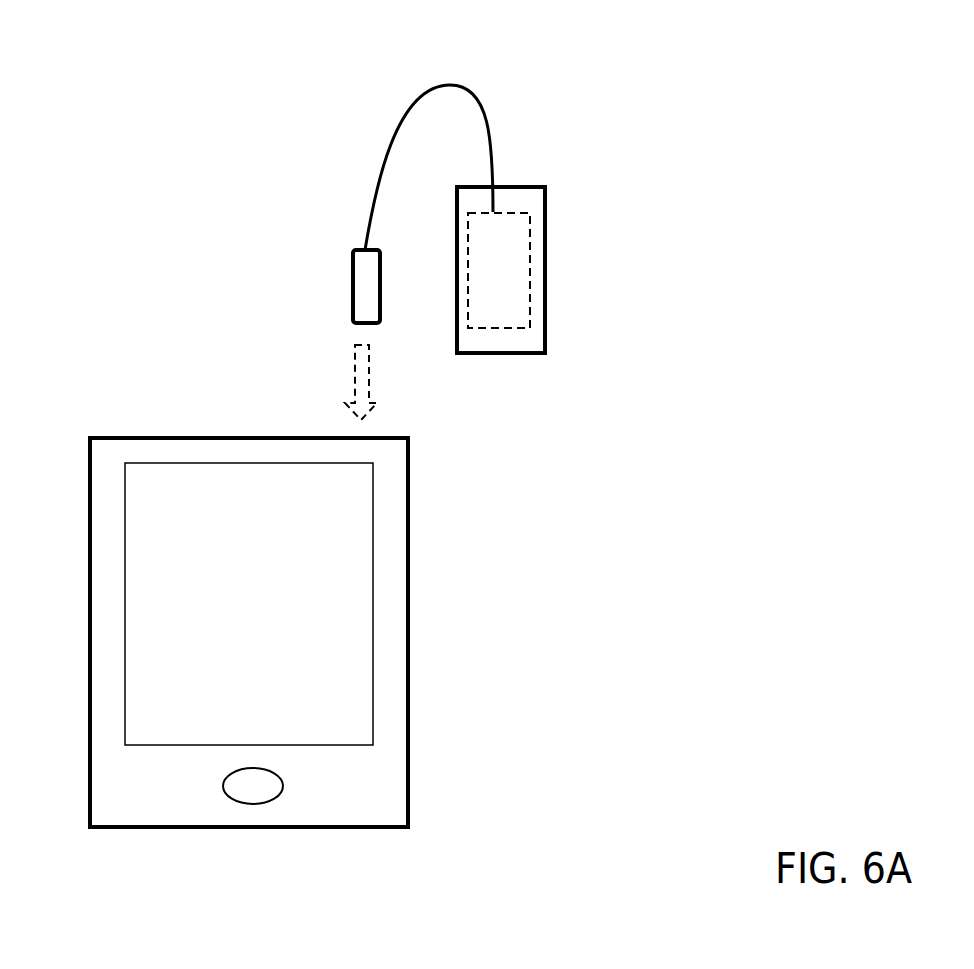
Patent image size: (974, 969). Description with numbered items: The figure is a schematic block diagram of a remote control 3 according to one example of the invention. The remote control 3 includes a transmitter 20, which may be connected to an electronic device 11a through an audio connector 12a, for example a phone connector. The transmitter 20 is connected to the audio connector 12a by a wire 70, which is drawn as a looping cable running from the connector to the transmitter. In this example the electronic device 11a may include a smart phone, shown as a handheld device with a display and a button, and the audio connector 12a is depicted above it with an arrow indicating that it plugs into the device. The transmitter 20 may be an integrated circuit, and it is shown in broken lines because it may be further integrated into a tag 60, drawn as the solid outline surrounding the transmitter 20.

The remote control 3 is at (721, 77).
The wire 70 is at (493, 143).
The tag 60 is at (543, 292).
The transmitter 20 is at (523, 285).
The audio connector 12a is at (352, 290).
The electronic device 11a is at (160, 437).